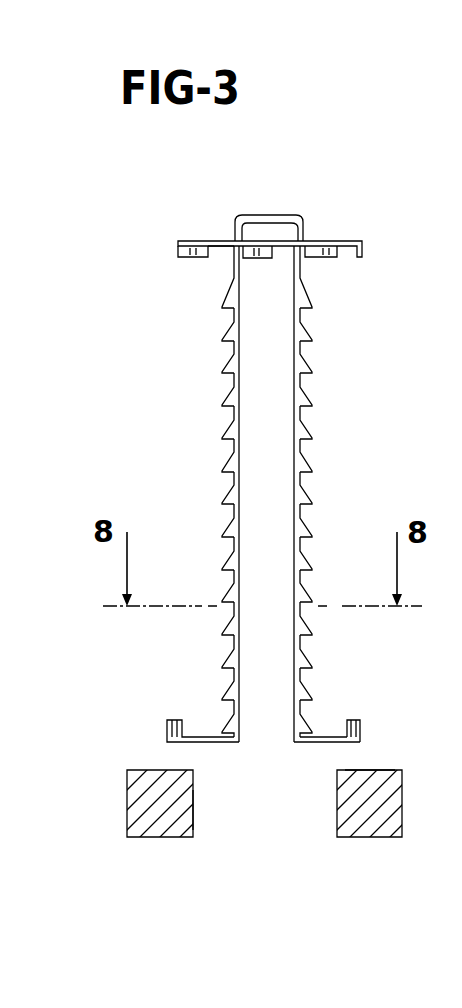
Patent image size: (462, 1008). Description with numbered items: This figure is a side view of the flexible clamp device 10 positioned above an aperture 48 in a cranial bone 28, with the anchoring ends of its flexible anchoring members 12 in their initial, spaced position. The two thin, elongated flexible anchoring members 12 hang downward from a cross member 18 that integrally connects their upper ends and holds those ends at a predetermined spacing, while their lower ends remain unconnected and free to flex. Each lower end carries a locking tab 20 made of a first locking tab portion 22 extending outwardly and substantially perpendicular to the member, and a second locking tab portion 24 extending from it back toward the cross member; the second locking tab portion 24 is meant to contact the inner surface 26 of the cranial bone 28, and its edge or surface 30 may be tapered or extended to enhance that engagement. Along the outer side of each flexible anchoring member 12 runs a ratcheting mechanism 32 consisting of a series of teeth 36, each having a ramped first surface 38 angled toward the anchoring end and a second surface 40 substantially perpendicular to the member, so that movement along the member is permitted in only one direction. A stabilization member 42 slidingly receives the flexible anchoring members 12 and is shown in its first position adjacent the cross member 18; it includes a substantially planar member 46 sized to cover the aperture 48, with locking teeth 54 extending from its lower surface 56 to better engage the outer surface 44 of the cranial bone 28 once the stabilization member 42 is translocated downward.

The flexible clamp device 10 is at (194, 204).
The flexible anchoring member 12 is at (303, 267).
The cross member 18 is at (263, 216).
The locking tab 20 is at (343, 706).
The first locking tab portion 22 is at (320, 742).
The second locking tab portion 24 is at (362, 723).
The inner surface 26 is at (377, 837).
The cranial bone 28 is at (150, 802).
The edge or surface 30 is at (167, 720).
The ratcheting mechanism 32 is at (209, 338).
The teeth 36 is at (224, 402).
The first surface 38 is at (224, 462).
The second surface 40 is at (221, 483).
The stabilization member 42 is at (176, 230).
The outer surface 44 is at (388, 770).
The planar member 46 is at (342, 241).
The aperture 48 is at (193, 810).
The locking teeth 54 is at (178, 248).
The lower surface 56 is at (219, 250).